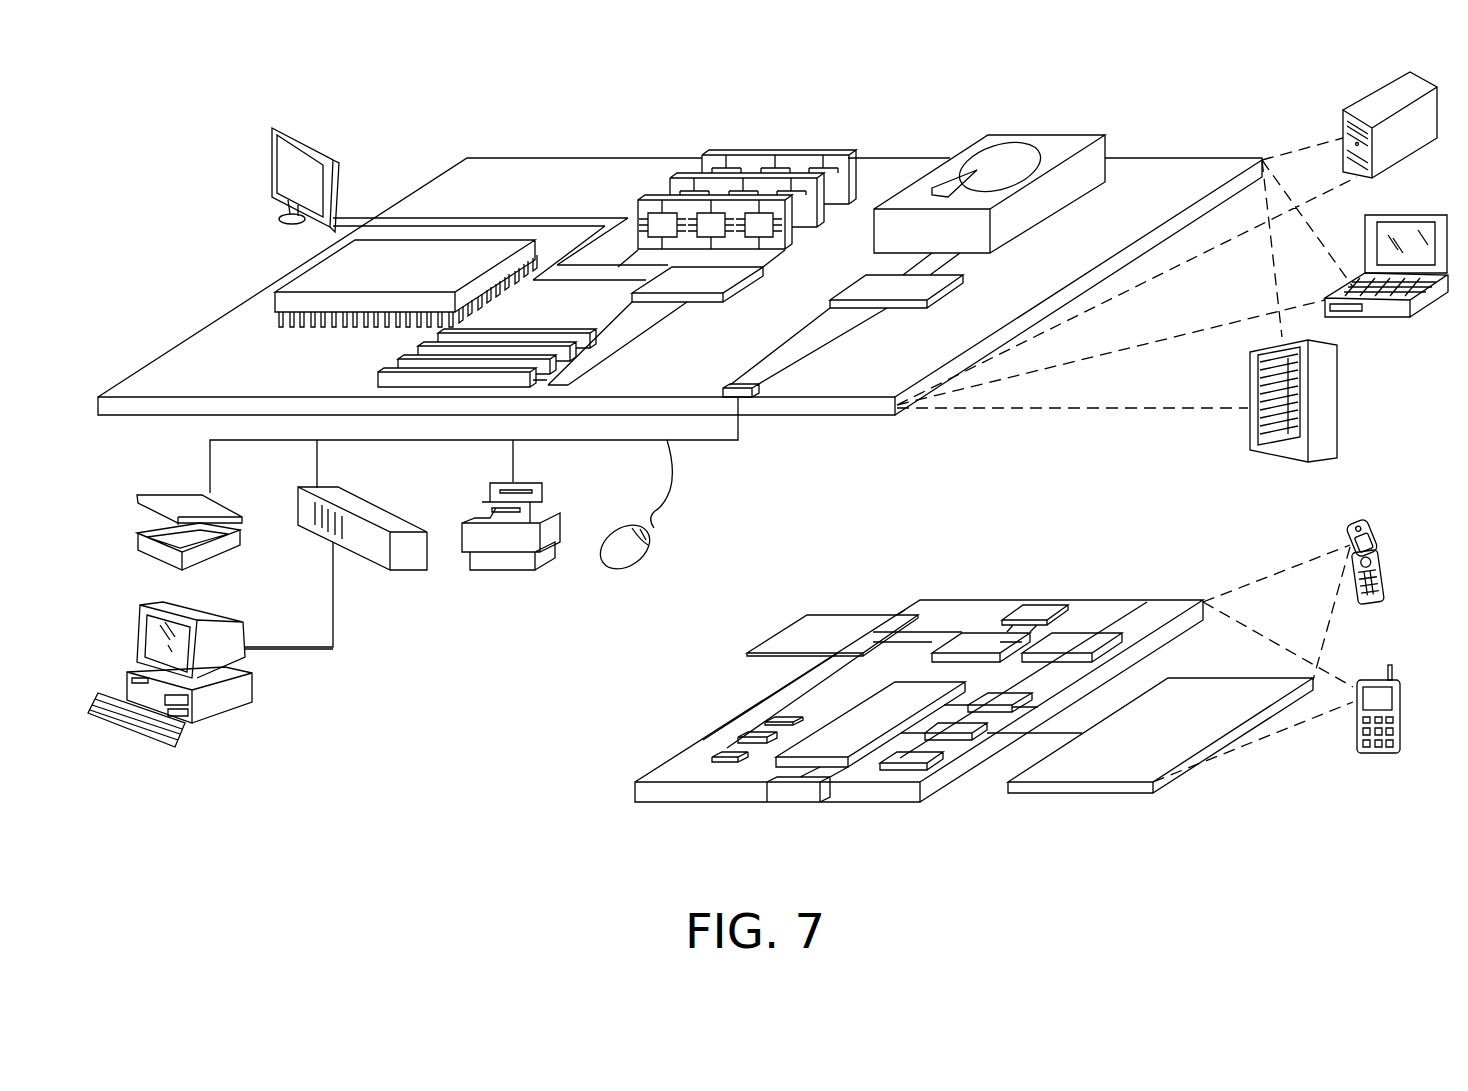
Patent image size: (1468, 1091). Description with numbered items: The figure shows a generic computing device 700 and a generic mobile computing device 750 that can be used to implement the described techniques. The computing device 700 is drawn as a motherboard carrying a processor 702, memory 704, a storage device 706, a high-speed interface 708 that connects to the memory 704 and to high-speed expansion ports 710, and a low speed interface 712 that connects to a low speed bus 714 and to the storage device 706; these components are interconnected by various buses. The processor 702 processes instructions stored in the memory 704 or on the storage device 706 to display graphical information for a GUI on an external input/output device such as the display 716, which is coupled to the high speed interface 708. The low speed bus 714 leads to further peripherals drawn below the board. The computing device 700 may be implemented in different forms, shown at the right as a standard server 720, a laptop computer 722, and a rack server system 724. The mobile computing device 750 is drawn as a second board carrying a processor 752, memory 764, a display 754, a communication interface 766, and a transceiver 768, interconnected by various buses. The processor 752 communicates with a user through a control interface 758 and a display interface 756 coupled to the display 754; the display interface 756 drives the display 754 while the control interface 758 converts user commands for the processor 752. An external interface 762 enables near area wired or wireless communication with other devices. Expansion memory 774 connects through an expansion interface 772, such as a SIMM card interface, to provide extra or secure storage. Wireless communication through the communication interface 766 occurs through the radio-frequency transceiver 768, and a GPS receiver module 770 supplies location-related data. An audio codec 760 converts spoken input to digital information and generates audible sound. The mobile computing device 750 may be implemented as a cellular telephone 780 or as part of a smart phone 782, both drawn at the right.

In FIG. 7, the computing device 700 is at (416, 107).
In FIG. 7, the processor 702 is at (300, 270).
In FIG. 7, the memory 704 is at (782, 152).
In FIG. 7, the storage device 706 is at (1033, 133).
In FIG. 7, the high-speed interface 708 is at (713, 292).
In FIG. 7, the high-speed expansion ports 710 is at (405, 357).
In FIG. 7, the low speed interface 712 is at (866, 283).
In FIG. 7, the low speed bus 714 is at (744, 381).
In FIG. 7, the display 716 is at (275, 125).
In FIG. 7, the standard server 720 is at (1365, 100).
In FIG. 7, the laptop computer 722 is at (1423, 213).
In FIG. 7, the rack server system 724 is at (1338, 401).
The mobile computing device 750 is at (585, 807).
The processor 752 is at (836, 730).
The display 754 is at (1202, 695).
The display interface 756 is at (922, 757).
The control interface 758 is at (963, 730).
The audio codec 760 is at (1005, 698).
The external interface 762 is at (795, 786).
The memory 764 is at (745, 735).
The communication interface 766 is at (982, 635).
The transceiver 768 is at (1080, 638).
The GPS receiver module 770 is at (1037, 610).
The expansion interface 772 is at (900, 612).
The expansion memory 774 is at (806, 612).
The cellular telephone 780 is at (1360, 518).
The smart phone 782 is at (1370, 680).